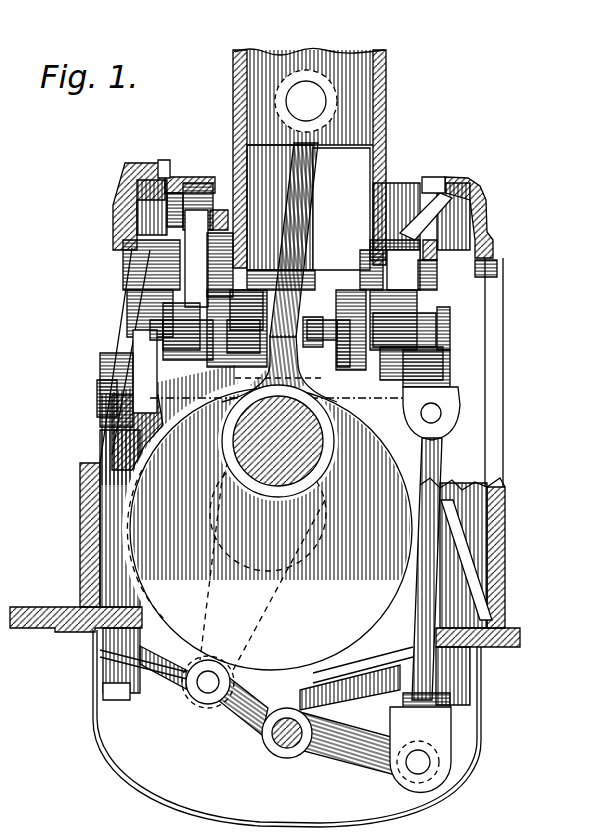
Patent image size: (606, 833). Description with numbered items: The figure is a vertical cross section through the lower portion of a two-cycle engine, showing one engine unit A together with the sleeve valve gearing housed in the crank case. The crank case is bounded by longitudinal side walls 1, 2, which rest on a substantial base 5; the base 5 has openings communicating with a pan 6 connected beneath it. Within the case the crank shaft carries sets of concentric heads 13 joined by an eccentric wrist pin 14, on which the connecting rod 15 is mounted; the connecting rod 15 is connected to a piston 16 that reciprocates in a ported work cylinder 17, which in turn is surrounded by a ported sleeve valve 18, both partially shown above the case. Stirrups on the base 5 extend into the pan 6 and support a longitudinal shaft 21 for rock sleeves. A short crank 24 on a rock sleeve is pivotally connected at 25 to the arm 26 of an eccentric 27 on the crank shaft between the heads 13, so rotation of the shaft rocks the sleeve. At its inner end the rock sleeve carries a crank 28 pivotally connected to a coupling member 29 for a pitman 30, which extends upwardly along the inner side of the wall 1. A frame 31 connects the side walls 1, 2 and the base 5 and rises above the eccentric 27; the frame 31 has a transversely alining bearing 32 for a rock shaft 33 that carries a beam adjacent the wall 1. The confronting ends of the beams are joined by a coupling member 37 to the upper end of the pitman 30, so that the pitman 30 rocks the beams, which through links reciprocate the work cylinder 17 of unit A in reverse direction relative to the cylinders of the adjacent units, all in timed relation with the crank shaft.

The longitudinal side wall 1 is at (505, 565).
The longitudinal side wall 2 is at (85, 552).
The base 5 is at (55, 628).
The pan 6 is at (125, 775).
The concentric heads 13 is at (272, 529).
The eccentric wrist pin 14 is at (305, 445).
The connecting rod 15 is at (300, 212).
The piston 16 is at (276, 62).
The work cylinder 17 is at (345, 168).
The sleeve valve 18 is at (386, 120).
The longitudinal shaft 21 is at (285, 748).
The short crank 24 is at (250, 720).
The pivotal connection 25 is at (207, 692).
The arm 26 is at (263, 621).
The eccentric 27 is at (208, 545).
The crank 28 is at (352, 752).
The coupling member 29 is at (452, 742).
The pitman 30 is at (432, 465).
The frame 31 is at (120, 448).
The bearing 32 is at (350, 330).
The rock shaft 33 is at (335, 275).
The coupling member 37 is at (455, 385).
The engine unit A is at (327, 159).